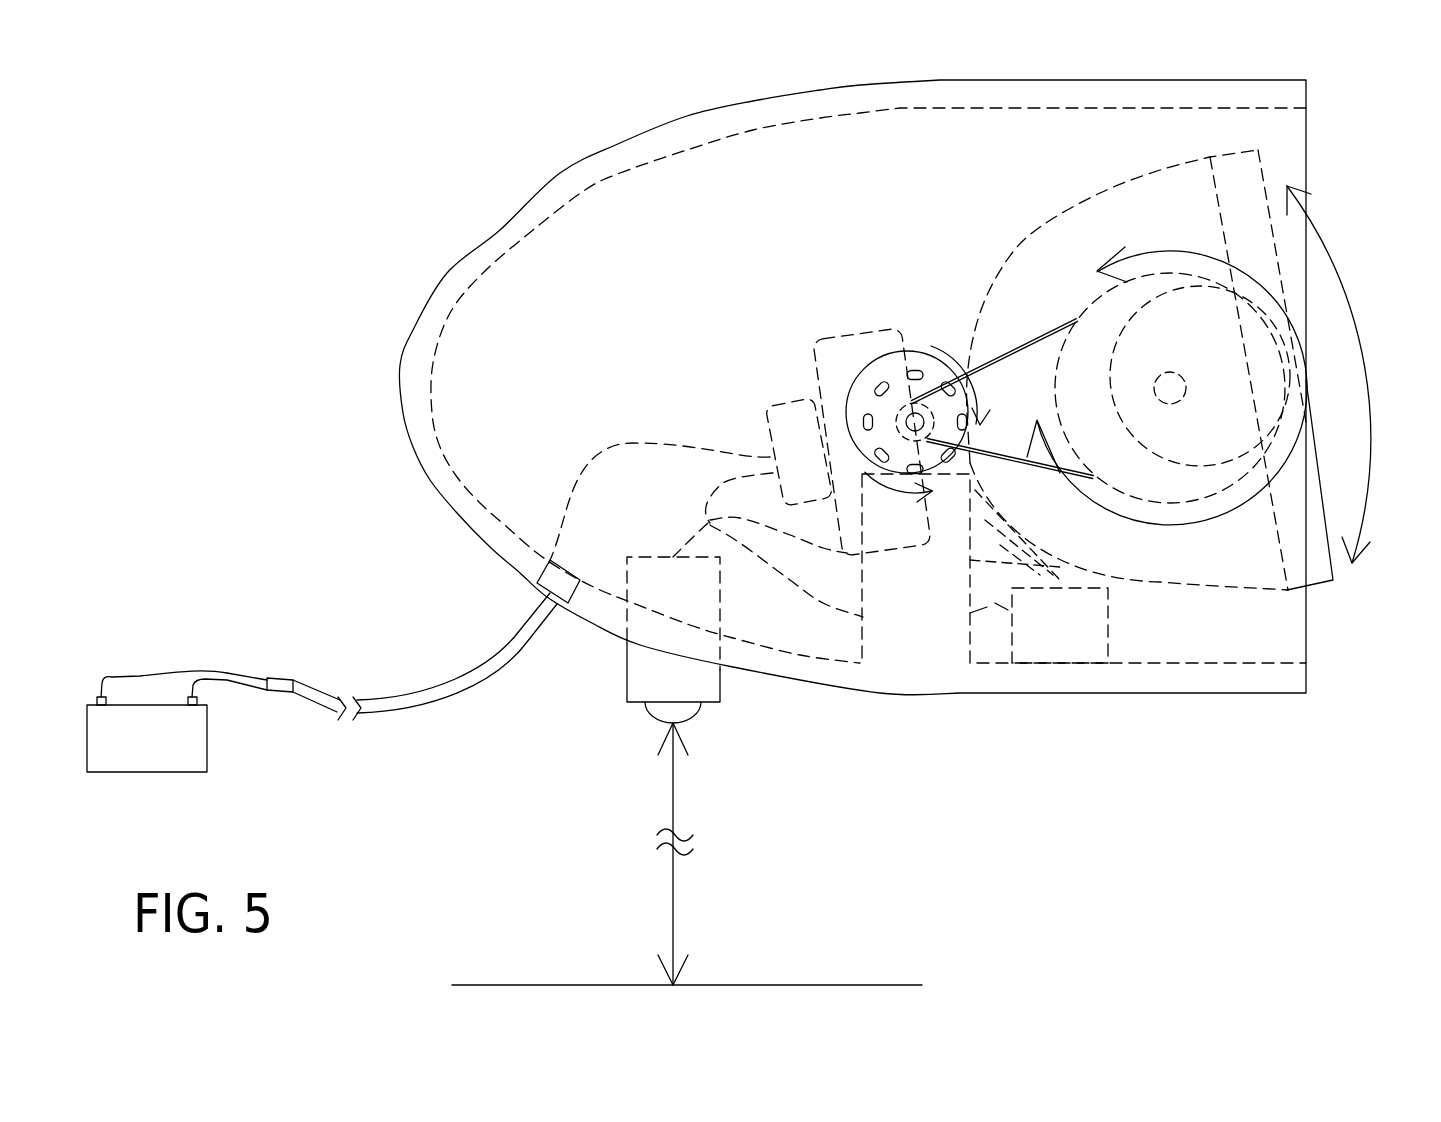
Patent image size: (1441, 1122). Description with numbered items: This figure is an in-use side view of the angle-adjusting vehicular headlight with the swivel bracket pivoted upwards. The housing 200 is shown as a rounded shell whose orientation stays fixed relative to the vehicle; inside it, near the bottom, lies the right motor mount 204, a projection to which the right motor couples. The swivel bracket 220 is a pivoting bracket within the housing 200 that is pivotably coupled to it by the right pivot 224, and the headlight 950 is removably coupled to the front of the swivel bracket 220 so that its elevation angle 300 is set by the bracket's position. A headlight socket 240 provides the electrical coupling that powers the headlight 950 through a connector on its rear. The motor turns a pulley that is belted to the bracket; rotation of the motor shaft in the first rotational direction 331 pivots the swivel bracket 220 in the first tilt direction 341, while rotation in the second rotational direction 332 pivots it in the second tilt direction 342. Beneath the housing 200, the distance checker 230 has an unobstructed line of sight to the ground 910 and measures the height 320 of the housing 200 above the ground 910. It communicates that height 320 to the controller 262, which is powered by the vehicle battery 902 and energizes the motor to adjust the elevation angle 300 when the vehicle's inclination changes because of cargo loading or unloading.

The housing 200 is at (447, 275).
The right motor mount 204 is at (907, 625).
The swivel bracket 220 is at (1243, 167).
The right pivot 224 is at (1170, 392).
The distance checker 230 is at (633, 687).
The headlight socket 240 is at (823, 333).
The controller 262 is at (1050, 646).
The elevation angle 300 is at (1363, 367).
The height 320 is at (673, 890).
The first rotational direction 331 is at (1046, 407).
The second rotational direction 332 is at (931, 547).
The first tilt direction 341 is at (1382, 565).
The second tilt direction 342 is at (1332, 360).
The vehicle battery 902 is at (177, 748).
The ground 910 is at (822, 983).
The headlight 950 is at (1047, 280).